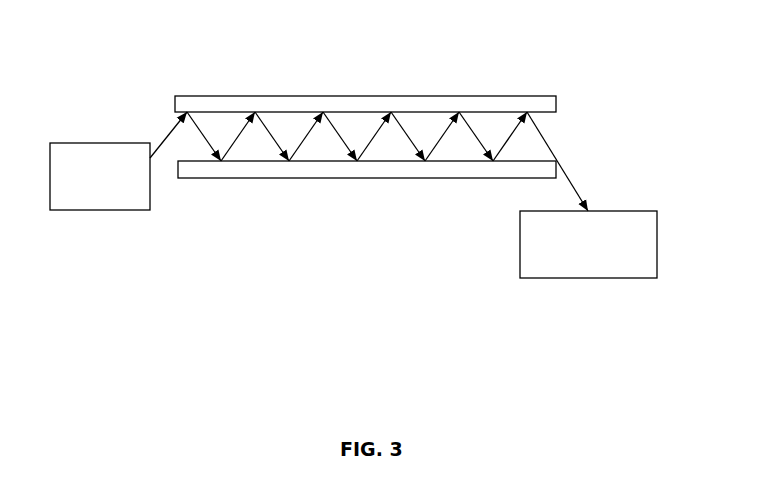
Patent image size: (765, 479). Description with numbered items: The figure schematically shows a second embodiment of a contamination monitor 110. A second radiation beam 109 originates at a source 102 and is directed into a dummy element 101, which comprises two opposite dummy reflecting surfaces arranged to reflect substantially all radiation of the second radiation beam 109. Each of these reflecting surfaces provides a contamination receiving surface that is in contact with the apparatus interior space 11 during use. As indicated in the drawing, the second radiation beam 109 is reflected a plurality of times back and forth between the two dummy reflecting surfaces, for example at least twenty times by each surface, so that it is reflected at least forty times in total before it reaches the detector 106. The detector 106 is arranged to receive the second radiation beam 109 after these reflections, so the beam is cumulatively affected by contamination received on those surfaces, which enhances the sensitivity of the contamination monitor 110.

The light source 102 is at (100, 176).
The detector 106 is at (588, 244).
The dummy element 101 is at (293, 173).
The second radiation beam 109 is at (166, 138).
The apparatus interior space 11 is at (394, 158).
The contamination monitor 110 is at (557, 67).